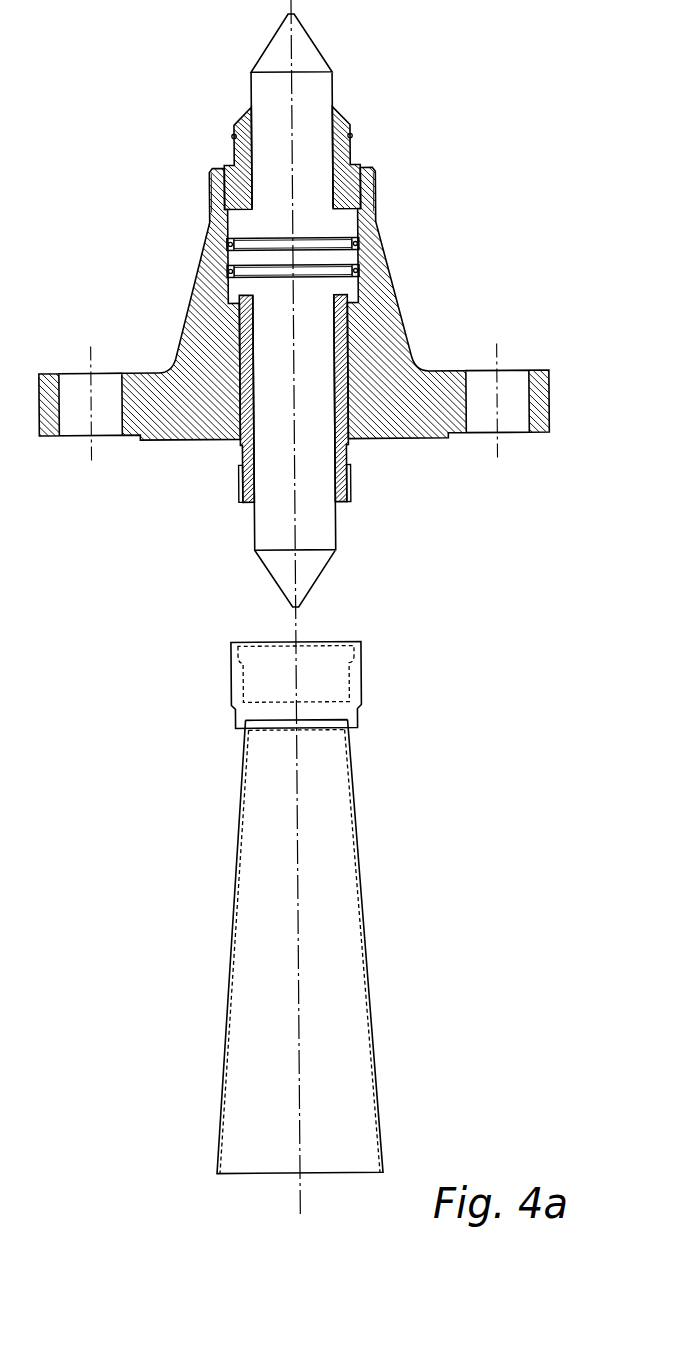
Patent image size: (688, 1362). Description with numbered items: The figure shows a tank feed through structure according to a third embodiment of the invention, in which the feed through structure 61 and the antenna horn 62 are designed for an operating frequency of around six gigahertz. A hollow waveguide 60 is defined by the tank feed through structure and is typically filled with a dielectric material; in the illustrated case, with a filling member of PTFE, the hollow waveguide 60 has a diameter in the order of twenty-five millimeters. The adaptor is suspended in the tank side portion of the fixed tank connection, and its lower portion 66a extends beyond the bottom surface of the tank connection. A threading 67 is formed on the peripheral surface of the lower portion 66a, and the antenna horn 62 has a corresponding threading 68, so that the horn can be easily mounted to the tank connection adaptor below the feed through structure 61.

The hollow waveguide 60 is at (311, 132).
The feed through structure 61 is at (466, 244).
The antenna horn 62 is at (355, 813).
The lower portion of the adaptor 66a is at (248, 483).
The threading 67 is at (348, 480).
The corresponding threading 68 is at (347, 681).